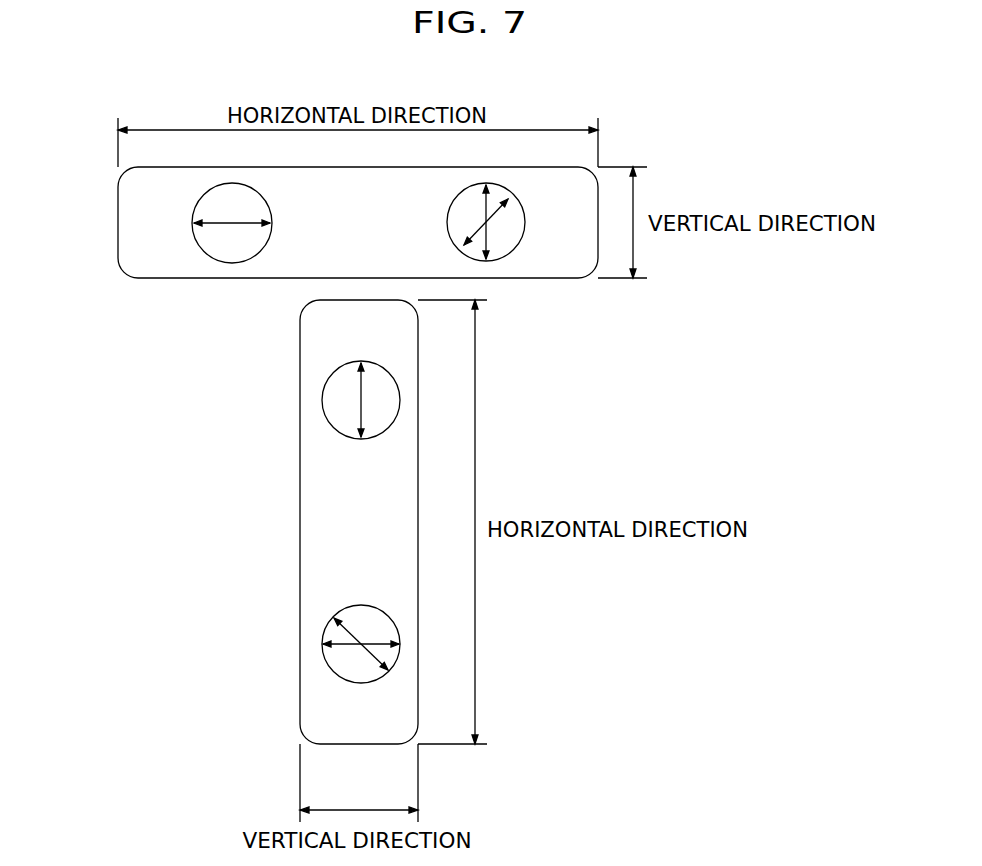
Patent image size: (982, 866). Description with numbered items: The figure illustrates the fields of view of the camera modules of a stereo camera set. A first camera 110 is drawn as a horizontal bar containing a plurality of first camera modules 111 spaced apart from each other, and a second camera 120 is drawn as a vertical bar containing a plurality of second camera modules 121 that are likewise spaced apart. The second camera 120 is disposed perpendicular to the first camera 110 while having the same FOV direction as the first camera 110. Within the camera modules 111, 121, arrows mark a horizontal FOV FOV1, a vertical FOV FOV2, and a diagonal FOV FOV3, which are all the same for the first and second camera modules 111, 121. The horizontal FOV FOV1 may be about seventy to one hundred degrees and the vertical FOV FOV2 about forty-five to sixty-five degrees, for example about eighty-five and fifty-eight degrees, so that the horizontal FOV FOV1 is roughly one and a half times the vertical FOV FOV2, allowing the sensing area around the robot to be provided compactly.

The first camera 110 is at (125, 225).
The first camera modules 111 is at (195, 240).
The second camera 120 is at (308, 491).
The second camera modules 121 is at (322, 403).
The horizontal FOV FOV1 is at (360, 396).
The vertical FOV FOV2 is at (488, 237).
The diagonal FOV FOV3 is at (486, 222).